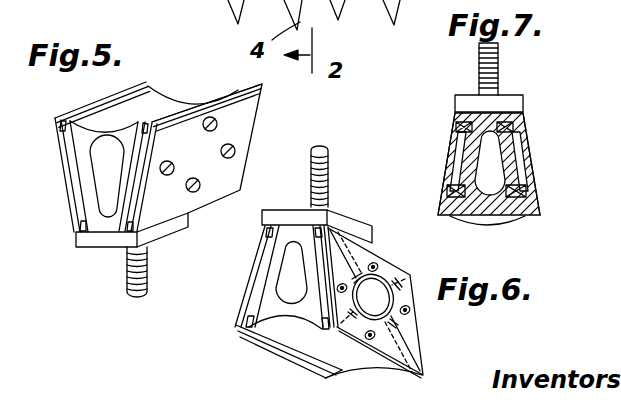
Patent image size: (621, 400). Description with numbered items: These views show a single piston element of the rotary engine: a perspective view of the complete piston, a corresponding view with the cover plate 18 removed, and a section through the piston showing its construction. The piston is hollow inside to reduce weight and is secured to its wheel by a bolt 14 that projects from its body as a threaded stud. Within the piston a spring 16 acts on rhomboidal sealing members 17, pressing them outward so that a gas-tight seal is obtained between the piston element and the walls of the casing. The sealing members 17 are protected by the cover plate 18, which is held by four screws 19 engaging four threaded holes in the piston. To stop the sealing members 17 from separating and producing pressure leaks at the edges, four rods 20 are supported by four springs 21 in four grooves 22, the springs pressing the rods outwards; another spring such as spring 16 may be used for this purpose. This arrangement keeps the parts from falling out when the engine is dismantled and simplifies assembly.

In FIG. 5, the bolt 14 is at (125, 280).
In FIG. 6, the bolt 14 is at (319, 176).
In FIG. 7, the bolt 14 is at (498, 62).
In FIG. 6, the spring 16 is at (408, 300).
In FIG. 7, the spring 16 is at (527, 157).
In FIG. 5, the rhomboidal sealing member 17 is at (78, 175).
In FIG. 6, the rhomboidal sealing member 17 is at (253, 292).
In FIG. 7, the rhomboidal sealing member 17 is at (520, 218).
In FIG. 5, the cover plate 18 is at (242, 108).
In FIG. 6, the cover plate 18 is at (243, 307).
In FIG. 7, the cover plate 18 is at (535, 185).
In FIG. 5, the screw 19 is at (221, 151).
In FIG. 7, the screw 19 is at (517, 125).
In FIG. 6, the rod 20 is at (343, 226).
In FIG. 6, the spring 21 is at (388, 257).
In FIG. 5, the groove 22 is at (72, 119).
In FIG. 6, the groove 22 is at (268, 229).